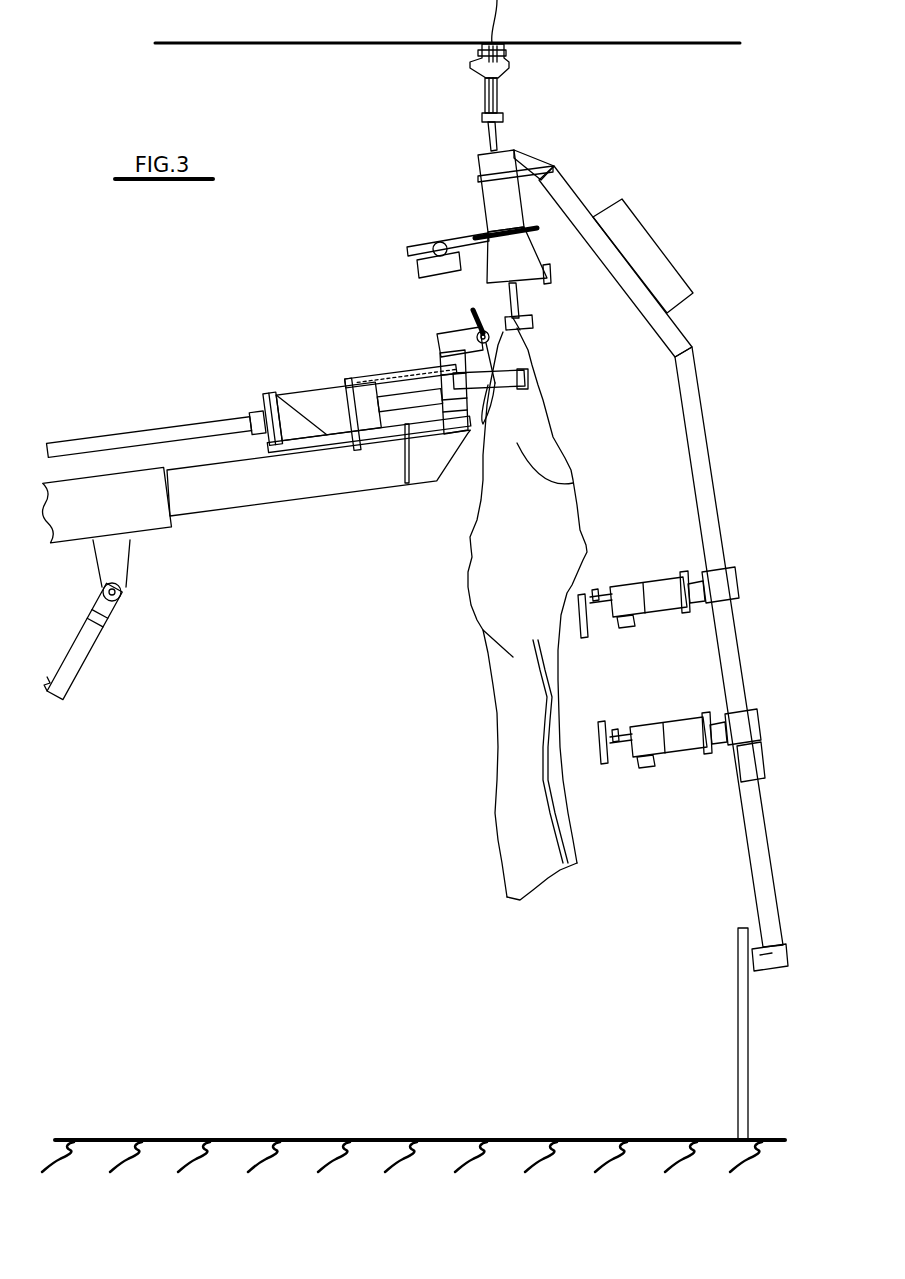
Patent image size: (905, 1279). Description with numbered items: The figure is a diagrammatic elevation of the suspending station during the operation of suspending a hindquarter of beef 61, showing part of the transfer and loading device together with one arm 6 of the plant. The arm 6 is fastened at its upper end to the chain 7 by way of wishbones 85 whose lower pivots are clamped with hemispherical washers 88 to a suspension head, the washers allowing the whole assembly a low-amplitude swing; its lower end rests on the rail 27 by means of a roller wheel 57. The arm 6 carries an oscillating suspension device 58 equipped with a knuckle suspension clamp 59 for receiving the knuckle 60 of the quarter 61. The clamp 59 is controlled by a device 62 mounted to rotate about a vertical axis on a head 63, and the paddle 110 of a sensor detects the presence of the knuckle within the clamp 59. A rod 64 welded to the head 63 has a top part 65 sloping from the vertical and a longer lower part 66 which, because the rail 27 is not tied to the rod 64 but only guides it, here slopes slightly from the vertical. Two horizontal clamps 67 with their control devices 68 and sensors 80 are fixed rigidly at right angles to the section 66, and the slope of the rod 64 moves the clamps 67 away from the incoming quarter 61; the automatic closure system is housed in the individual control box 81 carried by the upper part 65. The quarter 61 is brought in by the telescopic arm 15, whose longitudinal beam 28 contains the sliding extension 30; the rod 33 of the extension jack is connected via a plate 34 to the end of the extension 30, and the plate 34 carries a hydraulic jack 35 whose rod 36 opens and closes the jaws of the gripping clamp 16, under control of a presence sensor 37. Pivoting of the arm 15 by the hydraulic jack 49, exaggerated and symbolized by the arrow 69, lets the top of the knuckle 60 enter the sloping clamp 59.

The wishbone 85 is at (510, 69).
The chain 7 is at (500, 95).
The hemispherical washer 88 is at (483, 116).
The head 63 is at (532, 154).
The top part of rod 65 is at (564, 197).
The oscillating suspension device 58 is at (480, 216).
The device 62 is at (503, 207).
The individual control box 81 is at (645, 250).
The paddle 110 is at (545, 275).
The knuckle suspension clamp 59 is at (542, 323).
The presence sensor 37 is at (473, 312).
The rod 36 is at (403, 367).
The gripping clamp 16 is at (528, 380).
The arm 6 is at (706, 335).
The rod 64 is at (729, 647).
The lower part of rod 66 is at (703, 468).
The telescopic arm 15 is at (264, 422).
The hydraulic jack 35 is at (327, 402).
The rod 33 is at (87, 440).
The arrow 69 is at (571, 370).
The knuckle 60 is at (573, 481).
The hindquarter of beef 61 is at (486, 737).
The plate 34 is at (408, 483).
The sliding extension 30 is at (283, 483).
The longitudinal beam 28 is at (64, 529).
The sensor 80 is at (597, 593).
The control device 68 is at (661, 588).
The horizontal clamp 67 is at (586, 625).
The hydraulic jack 49 is at (62, 672).
The roller wheel 57 is at (765, 966).
The rail 27 is at (756, 975).